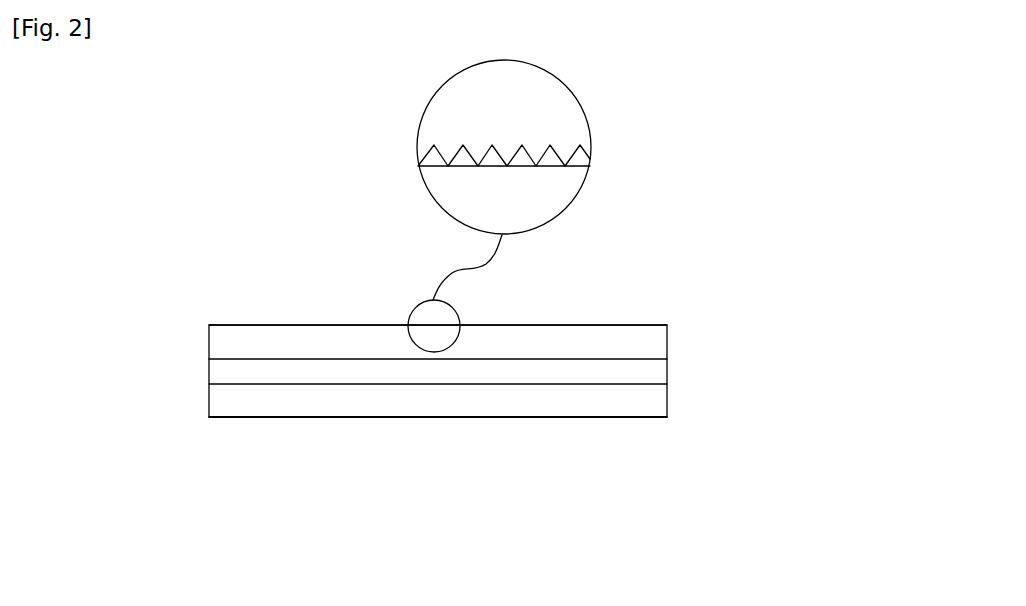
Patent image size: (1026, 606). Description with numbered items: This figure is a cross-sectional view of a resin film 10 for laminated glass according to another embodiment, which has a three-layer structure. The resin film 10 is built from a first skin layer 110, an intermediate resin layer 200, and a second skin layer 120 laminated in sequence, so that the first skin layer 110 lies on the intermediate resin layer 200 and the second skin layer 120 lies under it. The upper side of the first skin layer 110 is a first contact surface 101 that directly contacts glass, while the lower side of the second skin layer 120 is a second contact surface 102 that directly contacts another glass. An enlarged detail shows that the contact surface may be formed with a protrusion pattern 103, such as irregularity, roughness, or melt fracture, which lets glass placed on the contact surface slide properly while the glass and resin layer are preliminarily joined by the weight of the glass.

The resin film 10 is at (244, 272).
The first contact surface 101 is at (580, 323).
The second contact surface 102 is at (572, 417).
The protrusion pattern 103 is at (572, 158).
The first skin layer 110 is at (653, 343).
The second skin layer 120 is at (653, 402).
The intermediate resin layer 200 is at (227, 373).